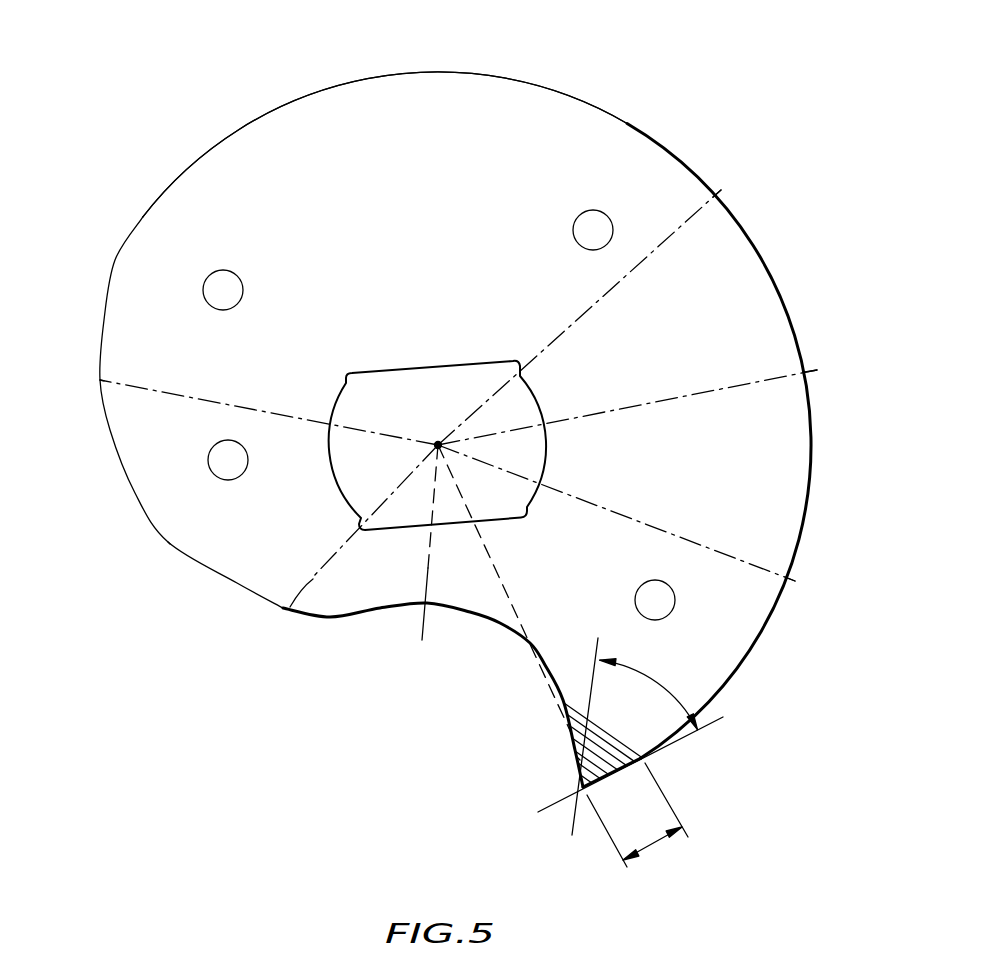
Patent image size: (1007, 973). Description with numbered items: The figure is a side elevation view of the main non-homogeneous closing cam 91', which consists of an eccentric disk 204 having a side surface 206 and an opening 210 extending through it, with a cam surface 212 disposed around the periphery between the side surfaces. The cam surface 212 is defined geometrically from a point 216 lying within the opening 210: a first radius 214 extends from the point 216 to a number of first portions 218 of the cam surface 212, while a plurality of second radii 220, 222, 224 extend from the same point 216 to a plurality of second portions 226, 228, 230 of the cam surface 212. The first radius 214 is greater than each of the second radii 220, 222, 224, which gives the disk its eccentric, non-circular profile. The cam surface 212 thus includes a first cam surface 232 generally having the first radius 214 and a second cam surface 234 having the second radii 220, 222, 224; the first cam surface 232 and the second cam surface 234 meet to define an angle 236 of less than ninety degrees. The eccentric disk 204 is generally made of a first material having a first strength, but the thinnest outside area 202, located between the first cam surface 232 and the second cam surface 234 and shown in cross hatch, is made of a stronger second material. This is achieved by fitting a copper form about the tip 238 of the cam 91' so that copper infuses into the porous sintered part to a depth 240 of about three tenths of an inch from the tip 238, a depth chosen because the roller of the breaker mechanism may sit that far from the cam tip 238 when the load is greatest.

The cam 91' is at (407, 217).
The thinnest outside area 202 is at (613, 752).
The eccentric disk 204 is at (378, 96).
The side surface 206 is at (198, 198).
The opening 210 is at (421, 368).
The cam surface 212 is at (634, 116).
The first radius 214 is at (637, 267).
The point 216 is at (434, 447).
The first portions 218 is at (721, 190).
The second radius 220 is at (187, 392).
The second radius 222 is at (315, 577).
The second radius 224 is at (427, 568).
The second portion 226 is at (100, 380).
The second portion 228 is at (290, 607).
The second portion 230 is at (436, 622).
The first cam surface 232 is at (606, 750).
The second cam surface 234 is at (168, 542).
The angle 236 is at (643, 672).
The tip 238 is at (580, 784).
The depth 240 is at (660, 838).